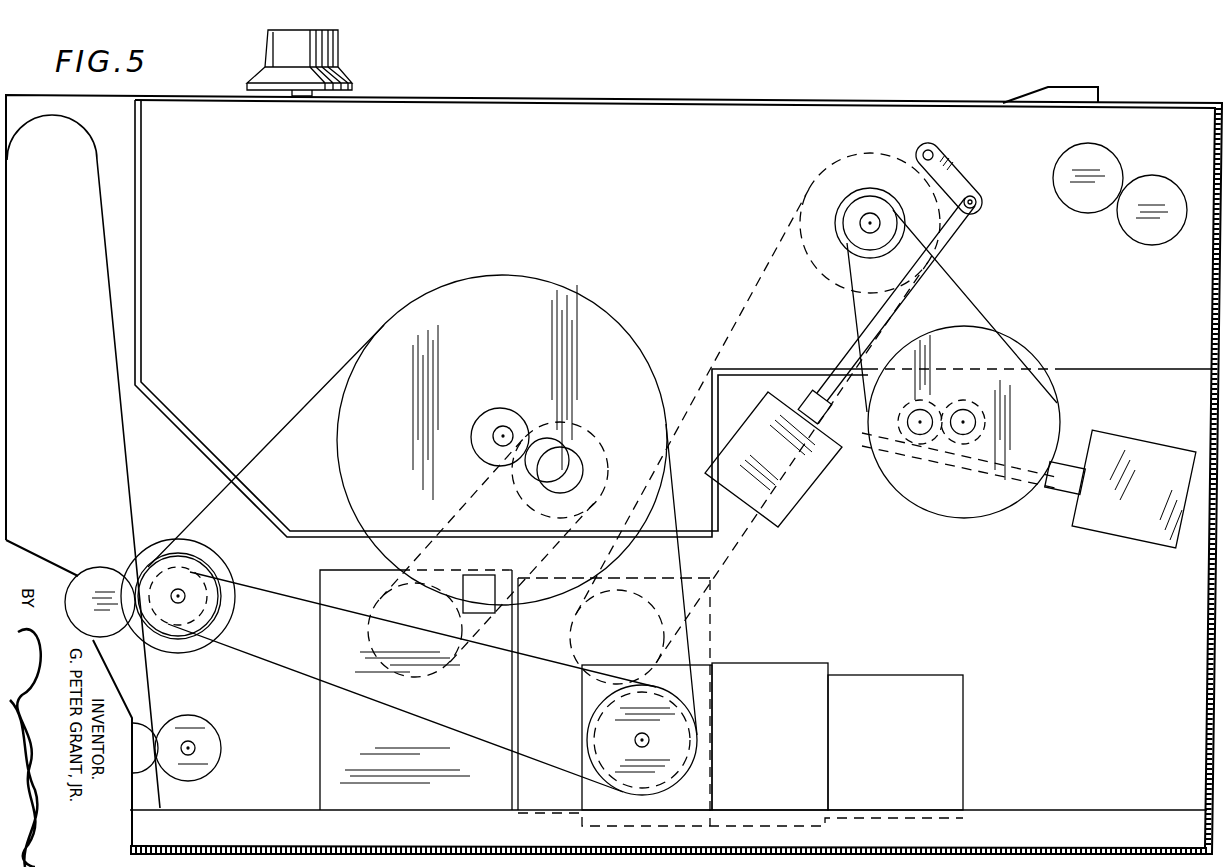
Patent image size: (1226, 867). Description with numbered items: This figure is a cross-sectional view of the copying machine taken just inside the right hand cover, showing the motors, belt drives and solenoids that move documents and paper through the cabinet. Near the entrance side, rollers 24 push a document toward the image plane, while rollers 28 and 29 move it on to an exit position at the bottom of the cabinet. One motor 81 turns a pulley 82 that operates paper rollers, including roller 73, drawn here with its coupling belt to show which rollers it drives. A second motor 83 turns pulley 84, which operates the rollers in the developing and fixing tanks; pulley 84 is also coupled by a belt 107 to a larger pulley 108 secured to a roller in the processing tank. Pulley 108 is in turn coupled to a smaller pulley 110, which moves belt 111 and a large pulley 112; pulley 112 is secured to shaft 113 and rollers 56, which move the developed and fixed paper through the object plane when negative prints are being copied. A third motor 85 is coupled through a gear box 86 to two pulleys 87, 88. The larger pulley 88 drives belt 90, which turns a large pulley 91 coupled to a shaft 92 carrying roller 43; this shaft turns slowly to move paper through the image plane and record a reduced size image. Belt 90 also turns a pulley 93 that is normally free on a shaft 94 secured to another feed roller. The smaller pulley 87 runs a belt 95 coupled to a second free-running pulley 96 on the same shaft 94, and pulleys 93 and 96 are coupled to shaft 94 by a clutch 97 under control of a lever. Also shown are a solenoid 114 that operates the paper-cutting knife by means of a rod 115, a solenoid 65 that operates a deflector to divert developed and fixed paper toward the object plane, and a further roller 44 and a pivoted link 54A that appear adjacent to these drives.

The roller 24 is at (105, 568).
The roller 28 is at (142, 724).
The roller 29 is at (215, 735).
The roller 43 is at (478, 444).
The roller 44 is at (555, 452).
The lever 54A is at (935, 152).
The rollers 56 is at (940, 405).
The solenoid 65 is at (812, 483).
The paper roller 73 is at (580, 467).
The motor 81 is at (391, 749).
The pulley 82 is at (372, 597).
The second motor 83 is at (558, 716).
The pulley 84 is at (571, 633).
The third motor 85 is at (935, 676).
The gear box 86 is at (795, 663).
The pulley 87 is at (665, 702).
The pulley 88 is at (670, 780).
The belt 90 is at (300, 412).
The large pulley 91 is at (529, 283).
The shaft 92 is at (507, 428).
The pulley 93 is at (210, 560).
The shaft 94 is at (178, 604).
The belt 95 is at (457, 722).
The free-running pulley 96 is at (225, 607).
The clutch 97 is at (165, 565).
The belt 107 is at (738, 545).
The larger pulley 108 is at (872, 153).
The smaller pulley 110 is at (878, 205).
The belt 111 is at (988, 300).
The large pulley 112 is at (1048, 400).
The shaft 113 is at (968, 418).
The solenoid 114 is at (1150, 452).
The rod 115 is at (935, 465).